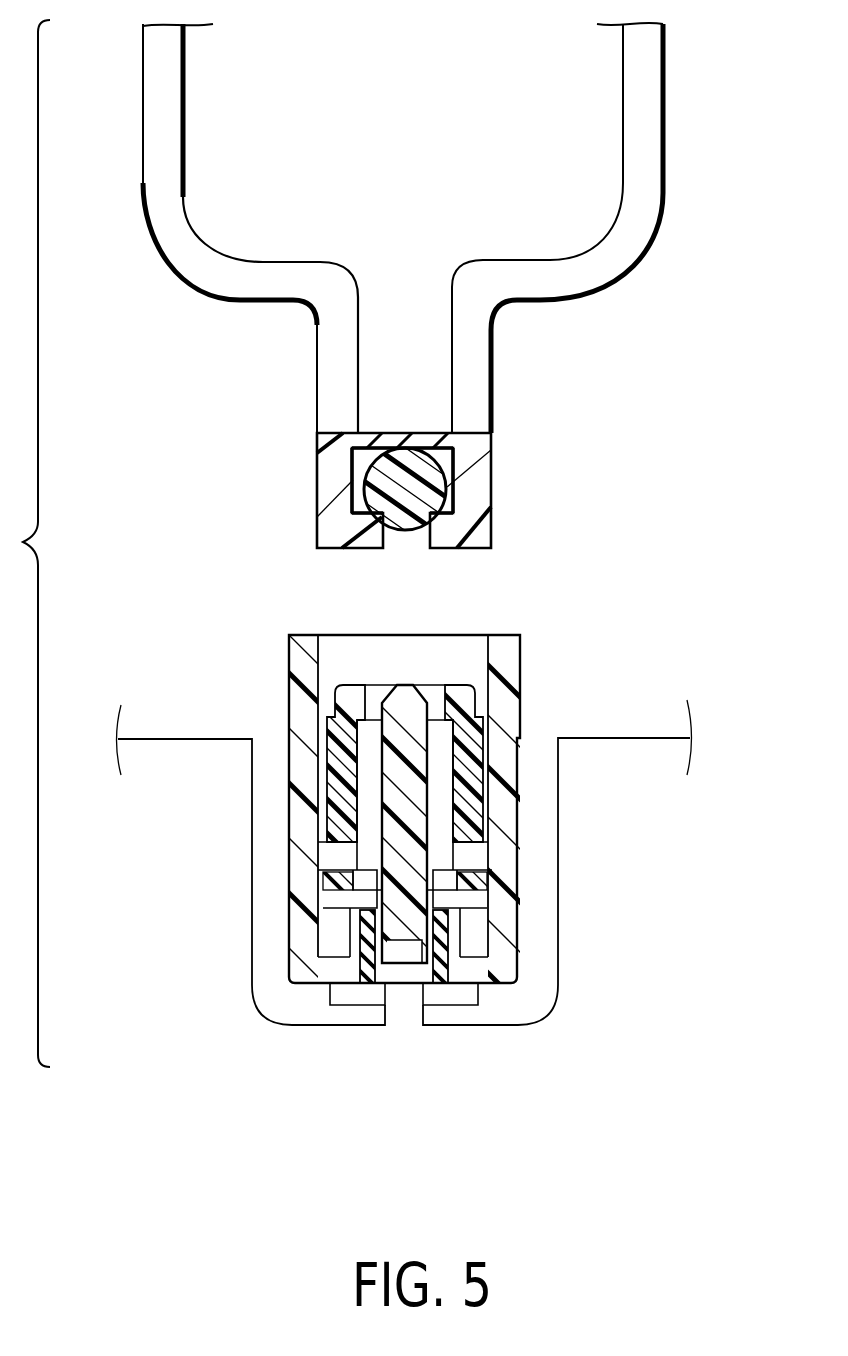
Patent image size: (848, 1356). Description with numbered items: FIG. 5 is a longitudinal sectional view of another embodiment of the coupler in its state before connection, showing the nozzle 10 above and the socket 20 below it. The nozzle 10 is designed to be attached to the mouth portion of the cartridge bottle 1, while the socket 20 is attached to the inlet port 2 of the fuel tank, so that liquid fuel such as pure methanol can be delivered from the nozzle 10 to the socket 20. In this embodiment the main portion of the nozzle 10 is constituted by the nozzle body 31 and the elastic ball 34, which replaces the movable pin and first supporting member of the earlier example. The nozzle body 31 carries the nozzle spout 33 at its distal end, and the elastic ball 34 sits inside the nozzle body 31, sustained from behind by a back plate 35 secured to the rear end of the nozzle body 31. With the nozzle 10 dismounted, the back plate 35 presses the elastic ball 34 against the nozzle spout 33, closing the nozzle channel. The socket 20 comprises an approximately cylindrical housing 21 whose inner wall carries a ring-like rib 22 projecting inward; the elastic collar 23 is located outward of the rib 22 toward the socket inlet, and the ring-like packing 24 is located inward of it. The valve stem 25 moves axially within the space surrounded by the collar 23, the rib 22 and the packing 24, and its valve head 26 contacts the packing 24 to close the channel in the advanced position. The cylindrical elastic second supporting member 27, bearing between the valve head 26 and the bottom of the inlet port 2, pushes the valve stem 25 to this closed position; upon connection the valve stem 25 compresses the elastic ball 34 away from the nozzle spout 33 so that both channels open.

The cartridge bottle 1 is at (643, 168).
The inlet port of fuel tank 2 is at (538, 970).
The nozzle 10 is at (520, 465).
The socket 20 is at (548, 646).
The housing 21 is at (318, 870).
The ring-like rib 22 is at (463, 855).
The collar 23 is at (337, 797).
The ring-like packing 24 is at (330, 875).
The valve stem 25 is at (388, 760).
The valve head 26 is at (333, 882).
The second supporting member 27 is at (355, 960).
The nozzle body 31 is at (318, 513).
The nozzle spout 33 is at (342, 548).
The elastic ball 34 is at (383, 480).
The back plate 35 is at (398, 433).